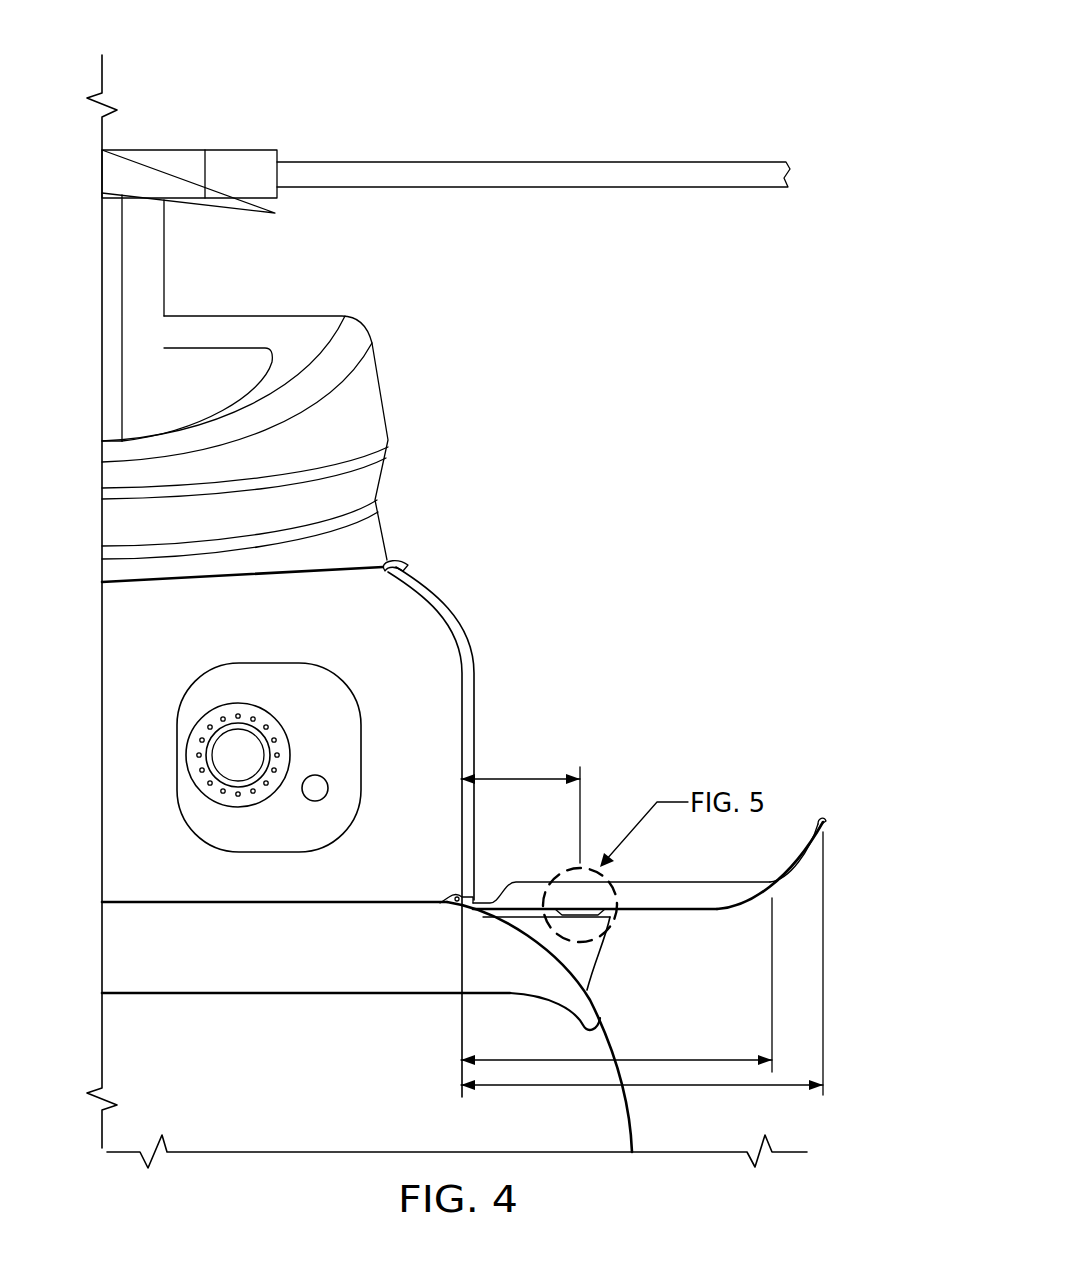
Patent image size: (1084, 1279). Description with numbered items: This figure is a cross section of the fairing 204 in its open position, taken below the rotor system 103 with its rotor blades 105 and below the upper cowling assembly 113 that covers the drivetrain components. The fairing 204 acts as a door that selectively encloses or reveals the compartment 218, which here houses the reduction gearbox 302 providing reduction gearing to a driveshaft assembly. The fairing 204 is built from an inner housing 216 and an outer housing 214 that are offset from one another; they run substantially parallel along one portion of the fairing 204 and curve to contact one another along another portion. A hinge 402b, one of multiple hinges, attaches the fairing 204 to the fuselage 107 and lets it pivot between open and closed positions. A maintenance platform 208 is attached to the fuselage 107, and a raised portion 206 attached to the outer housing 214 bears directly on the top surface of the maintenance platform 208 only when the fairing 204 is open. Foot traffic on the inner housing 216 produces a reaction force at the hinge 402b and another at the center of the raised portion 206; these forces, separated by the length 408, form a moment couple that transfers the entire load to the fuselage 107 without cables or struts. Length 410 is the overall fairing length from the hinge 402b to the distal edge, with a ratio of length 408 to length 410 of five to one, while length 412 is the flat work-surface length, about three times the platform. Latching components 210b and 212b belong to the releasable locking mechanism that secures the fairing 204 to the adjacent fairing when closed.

The rotor system 103 is at (204, 70).
The rotor blade 105 is at (530, 162).
The upper cowling assembly 113 is at (384, 387).
The latching component 212b is at (402, 562).
The compartment 218 is at (432, 634).
The reduction gearbox 302 is at (325, 672).
The length 408 is at (520, 779).
The hinge 402b is at (455, 900).
The fairing 204 is at (563, 893).
The raised portion 206 is at (613, 925).
The maintenance platform 208 is at (600, 960).
The fuselage 107 is at (585, 1013).
The inner housing 216 is at (708, 882).
The outer housing 214 is at (722, 910).
The latching component 210b is at (828, 822).
The length 412 is at (563, 1063).
The length 410 is at (683, 1088).